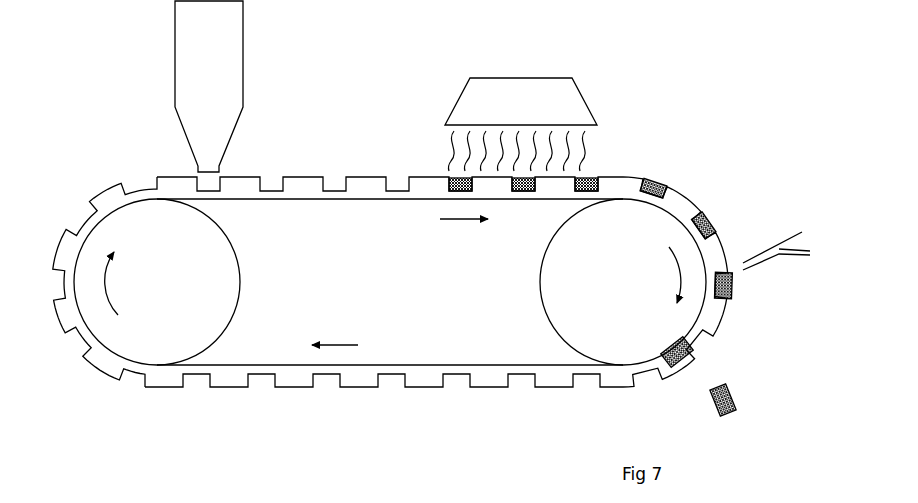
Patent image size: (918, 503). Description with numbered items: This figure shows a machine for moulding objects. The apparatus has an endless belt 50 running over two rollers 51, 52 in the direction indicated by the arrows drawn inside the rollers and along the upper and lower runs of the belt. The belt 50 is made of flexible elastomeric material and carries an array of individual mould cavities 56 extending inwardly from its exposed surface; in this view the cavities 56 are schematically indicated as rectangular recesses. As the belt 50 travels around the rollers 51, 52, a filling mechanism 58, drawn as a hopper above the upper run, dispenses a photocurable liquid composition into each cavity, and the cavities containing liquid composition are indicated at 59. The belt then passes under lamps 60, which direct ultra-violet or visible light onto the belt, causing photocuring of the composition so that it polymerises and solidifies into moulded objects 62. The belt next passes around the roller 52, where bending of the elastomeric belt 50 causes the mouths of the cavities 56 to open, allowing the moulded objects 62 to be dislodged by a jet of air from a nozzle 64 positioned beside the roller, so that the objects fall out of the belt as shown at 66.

The endless belt 50 is at (390, 279).
The roller 51 is at (173, 322).
The roller 52 is at (606, 338).
The mould cavities 56 is at (268, 378).
The filling mechanism 58 is at (212, 100).
The cavities containing liquid composition 59 is at (333, 178).
The lamps 60 is at (553, 100).
The moulded objects 62 is at (600, 178).
The nozzle 64 is at (763, 252).
The moulded objects falling out 66 is at (690, 357).